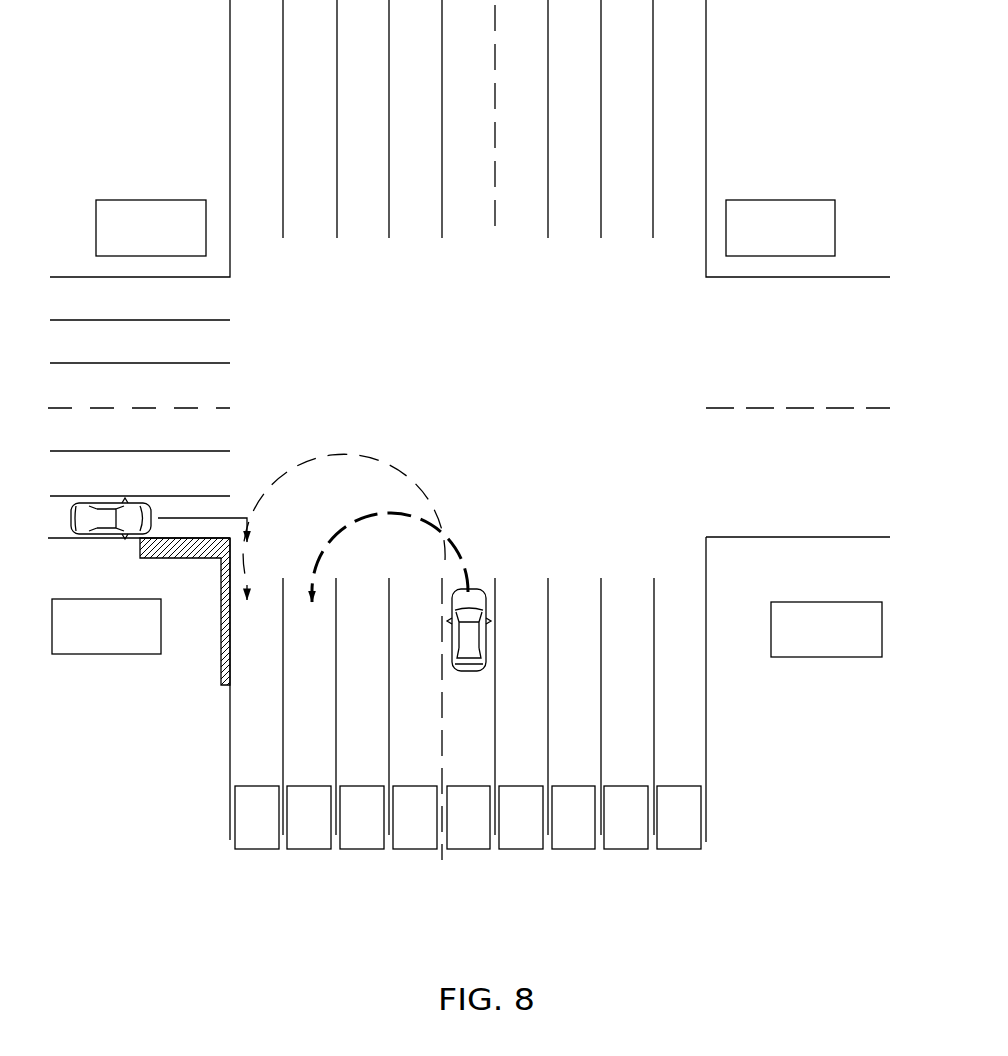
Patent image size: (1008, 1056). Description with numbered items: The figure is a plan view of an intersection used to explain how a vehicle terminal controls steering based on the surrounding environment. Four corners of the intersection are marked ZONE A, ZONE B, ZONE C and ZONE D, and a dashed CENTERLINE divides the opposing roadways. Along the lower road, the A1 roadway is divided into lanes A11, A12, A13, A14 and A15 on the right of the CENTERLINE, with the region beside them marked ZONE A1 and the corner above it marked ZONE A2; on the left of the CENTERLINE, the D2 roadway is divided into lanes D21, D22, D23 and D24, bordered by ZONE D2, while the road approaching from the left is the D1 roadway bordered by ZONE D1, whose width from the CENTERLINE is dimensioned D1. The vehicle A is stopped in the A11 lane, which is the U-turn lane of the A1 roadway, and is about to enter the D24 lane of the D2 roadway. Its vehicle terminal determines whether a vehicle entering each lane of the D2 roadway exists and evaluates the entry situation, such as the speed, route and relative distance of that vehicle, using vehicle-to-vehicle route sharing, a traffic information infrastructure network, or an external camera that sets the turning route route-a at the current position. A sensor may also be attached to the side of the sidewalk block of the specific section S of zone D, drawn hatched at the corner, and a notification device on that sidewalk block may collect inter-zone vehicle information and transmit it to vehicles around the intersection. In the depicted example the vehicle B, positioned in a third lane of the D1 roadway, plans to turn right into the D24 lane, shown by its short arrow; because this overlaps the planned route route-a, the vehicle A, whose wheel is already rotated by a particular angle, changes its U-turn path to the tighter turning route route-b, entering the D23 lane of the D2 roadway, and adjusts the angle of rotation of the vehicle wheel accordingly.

The vehicle A is at (488, 632).
The vehicle B is at (109, 503).
The specific section S is at (219, 538).
The turning route route-a is at (352, 482).
The turning route route-b is at (370, 525).
The D1 roadway D1 is at (61, 411).
The D2 roadway D2 is at (442, 860).
The A1 roadway A1 is at (706, 850).
The centerline CENTERLINE is at (687, 408).
The D21 lane D21 is at (415, 817).
The D22 lane D22 is at (362, 817).
The D23 lane D23 is at (309, 817).
The D24 lane D24 is at (257, 817).
The A11 lane A11 is at (468, 817).
The A12 lane A12 is at (521, 817).
The A13 lane A13 is at (573, 817).
The A14 lane A14 is at (626, 817).
The A15 lane A15 is at (679, 817).
The zone A ZONE A is at (826, 629).
The zone B ZONE B is at (780, 228).
The zone C ZONE C is at (151, 228).
The zone D ZONE D is at (106, 626).
The zone A1 ZONE A1 is at (735, 639).
The zone A2 ZONE A2 is at (804, 561).
The zone D1 ZONE D1 is at (90, 559).
The zone D2 ZONE D2 is at (193, 626).